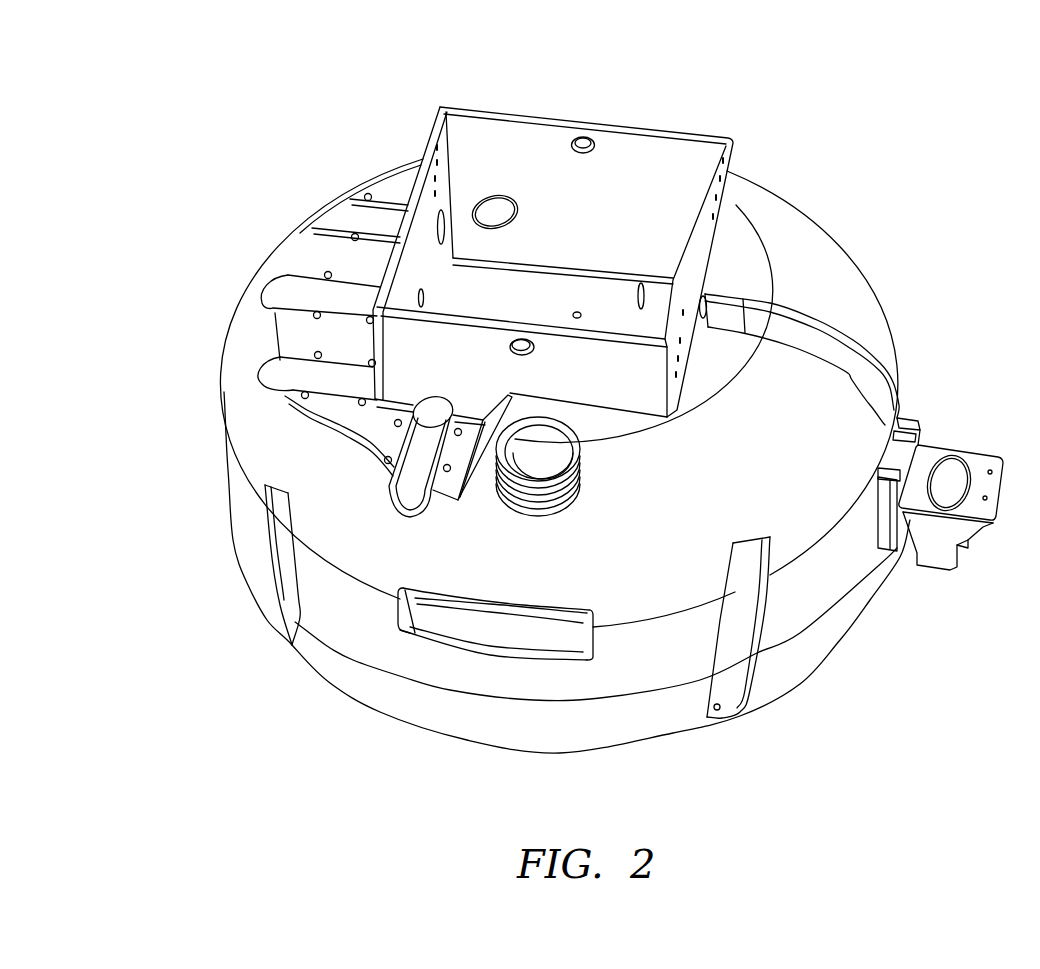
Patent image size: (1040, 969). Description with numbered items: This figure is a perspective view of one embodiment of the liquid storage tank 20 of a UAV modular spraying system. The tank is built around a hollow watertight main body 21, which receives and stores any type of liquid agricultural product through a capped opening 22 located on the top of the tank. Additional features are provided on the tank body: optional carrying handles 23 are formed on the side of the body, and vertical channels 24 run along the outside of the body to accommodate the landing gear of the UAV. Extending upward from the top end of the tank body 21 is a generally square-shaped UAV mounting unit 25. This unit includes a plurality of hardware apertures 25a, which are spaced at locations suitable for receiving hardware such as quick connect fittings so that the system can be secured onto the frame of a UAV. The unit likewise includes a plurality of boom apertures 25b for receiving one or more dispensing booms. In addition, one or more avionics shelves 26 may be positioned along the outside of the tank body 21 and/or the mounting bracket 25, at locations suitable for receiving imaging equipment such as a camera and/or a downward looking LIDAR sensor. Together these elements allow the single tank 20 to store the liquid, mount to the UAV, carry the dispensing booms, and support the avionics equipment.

The liquid storage tank 20 is at (226, 226).
The main body 21 is at (842, 283).
The capped opening 22 is at (557, 465).
The carrying handle 23 is at (533, 637).
The vertical channel 24 is at (282, 548).
The UAV mounting unit 25 is at (696, 128).
The hardware aperture 25a is at (587, 137).
The boom aperture 25b is at (420, 293).
The avionics shelf 26 is at (985, 460).